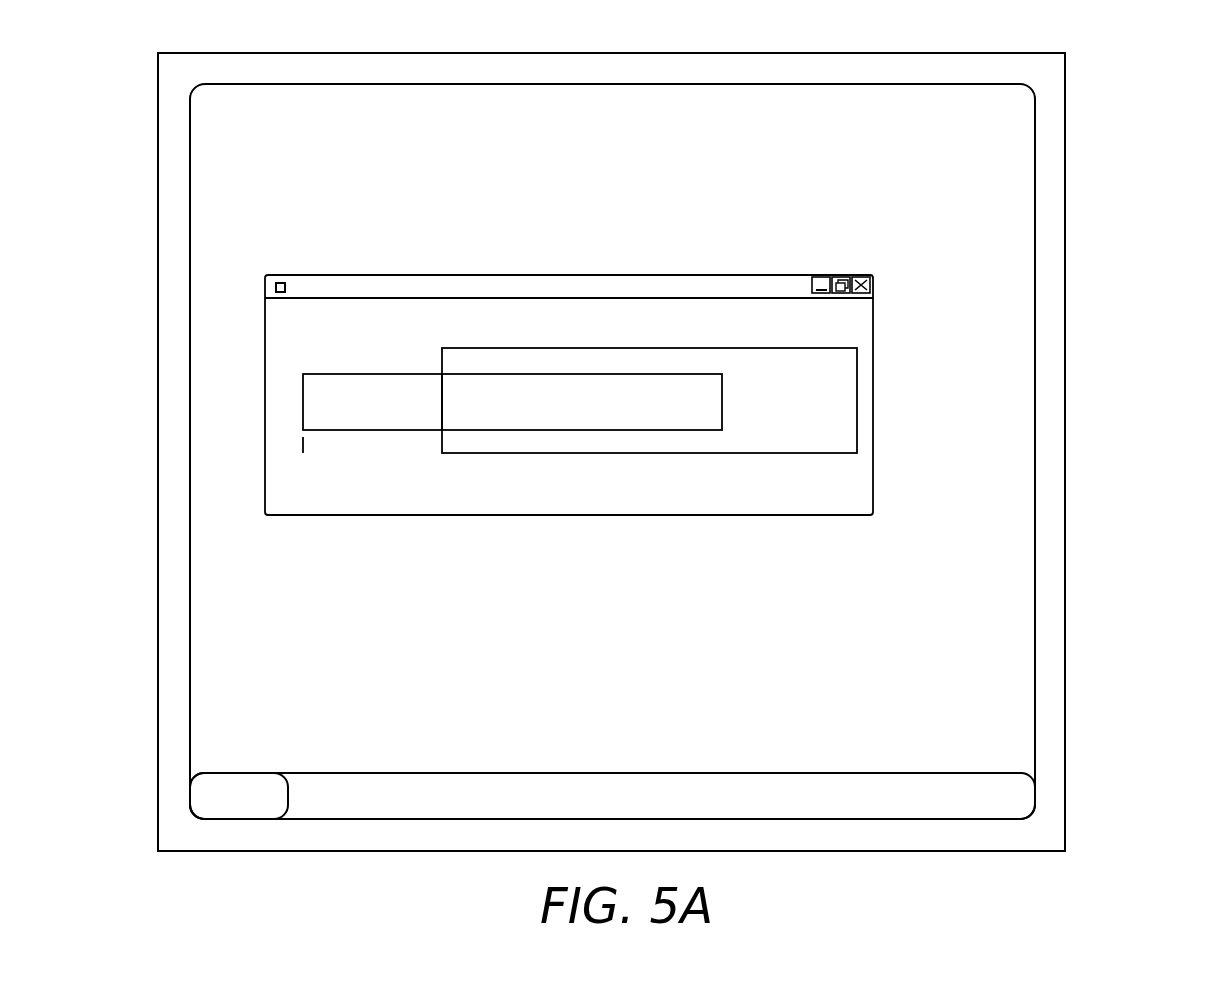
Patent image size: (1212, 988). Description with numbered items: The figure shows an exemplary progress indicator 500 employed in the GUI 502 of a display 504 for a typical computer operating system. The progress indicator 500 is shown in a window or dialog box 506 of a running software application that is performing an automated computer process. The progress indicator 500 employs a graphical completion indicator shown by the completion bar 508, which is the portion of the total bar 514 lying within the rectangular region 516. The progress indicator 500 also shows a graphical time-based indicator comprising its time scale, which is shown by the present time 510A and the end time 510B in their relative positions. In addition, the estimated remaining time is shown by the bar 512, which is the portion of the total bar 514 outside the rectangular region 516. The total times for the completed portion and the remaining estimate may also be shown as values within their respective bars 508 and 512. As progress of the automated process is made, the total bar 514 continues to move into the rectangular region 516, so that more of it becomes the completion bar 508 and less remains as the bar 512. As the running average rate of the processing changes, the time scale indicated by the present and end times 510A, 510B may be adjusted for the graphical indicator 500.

The progress indicator 500 is at (380, 249).
The GUI 502 is at (1035, 258).
The display 504 is at (1064, 89).
The window or dialog box 506 is at (353, 274).
The completion bar 508 is at (575, 374).
The present time 510A is at (472, 318).
The end time 510B is at (311, 503).
The bar 512 is at (383, 374).
The total bar 514 is at (733, 382).
The rectangular region 516 is at (858, 359).